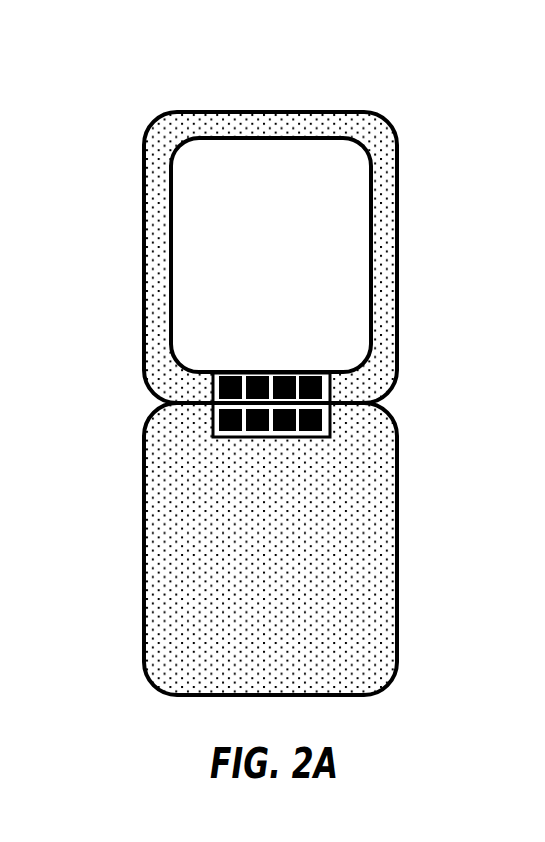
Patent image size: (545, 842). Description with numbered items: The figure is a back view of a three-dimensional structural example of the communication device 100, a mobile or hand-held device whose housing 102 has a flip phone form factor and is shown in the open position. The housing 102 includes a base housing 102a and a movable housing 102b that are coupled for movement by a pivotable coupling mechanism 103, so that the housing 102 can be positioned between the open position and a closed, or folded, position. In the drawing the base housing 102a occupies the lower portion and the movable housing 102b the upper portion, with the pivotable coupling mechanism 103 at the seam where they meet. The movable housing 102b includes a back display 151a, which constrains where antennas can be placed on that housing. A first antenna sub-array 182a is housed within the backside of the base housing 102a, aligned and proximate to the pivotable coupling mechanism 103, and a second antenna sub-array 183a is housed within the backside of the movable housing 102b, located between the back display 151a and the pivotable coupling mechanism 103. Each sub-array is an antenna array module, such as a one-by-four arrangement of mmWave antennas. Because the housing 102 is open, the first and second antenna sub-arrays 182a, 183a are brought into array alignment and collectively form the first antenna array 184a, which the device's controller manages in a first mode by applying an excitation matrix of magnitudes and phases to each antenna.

The communication device 100 is at (276, 380).
The housing 102 is at (276, 380).
The base housing 102a is at (144, 552).
The movable housing 102b is at (311, 112).
The pivotable coupling mechanism 103 is at (368, 403).
The back display 151a is at (372, 177).
The first antenna sub-array 182a is at (215, 430).
The second antenna sub-array 183a is at (215, 390).
The first antenna array 184a is at (276, 399).